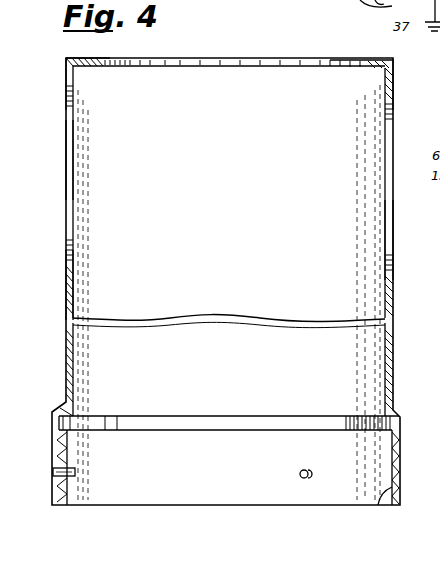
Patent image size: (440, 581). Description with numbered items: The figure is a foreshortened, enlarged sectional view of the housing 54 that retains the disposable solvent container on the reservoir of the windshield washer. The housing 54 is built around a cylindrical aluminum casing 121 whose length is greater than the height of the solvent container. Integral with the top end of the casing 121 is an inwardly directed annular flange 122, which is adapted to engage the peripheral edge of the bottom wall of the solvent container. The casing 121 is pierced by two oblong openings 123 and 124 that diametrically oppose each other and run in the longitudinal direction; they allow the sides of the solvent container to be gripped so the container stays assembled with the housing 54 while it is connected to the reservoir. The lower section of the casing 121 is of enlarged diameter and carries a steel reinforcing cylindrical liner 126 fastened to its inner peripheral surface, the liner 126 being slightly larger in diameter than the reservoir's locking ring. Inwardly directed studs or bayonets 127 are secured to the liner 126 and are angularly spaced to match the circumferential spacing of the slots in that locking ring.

The housing 54 is at (60, 74).
The inwardly directed annular flange 122 is at (372, 62).
The oblong opening 123 is at (70, 164).
The cylindrical aluminum casing 121 is at (66, 292).
The oblong opening 124 is at (388, 231).
The studs or bayonets 127 is at (77, 478).
The metal reinforcing cylindrical liner 126 is at (383, 495).